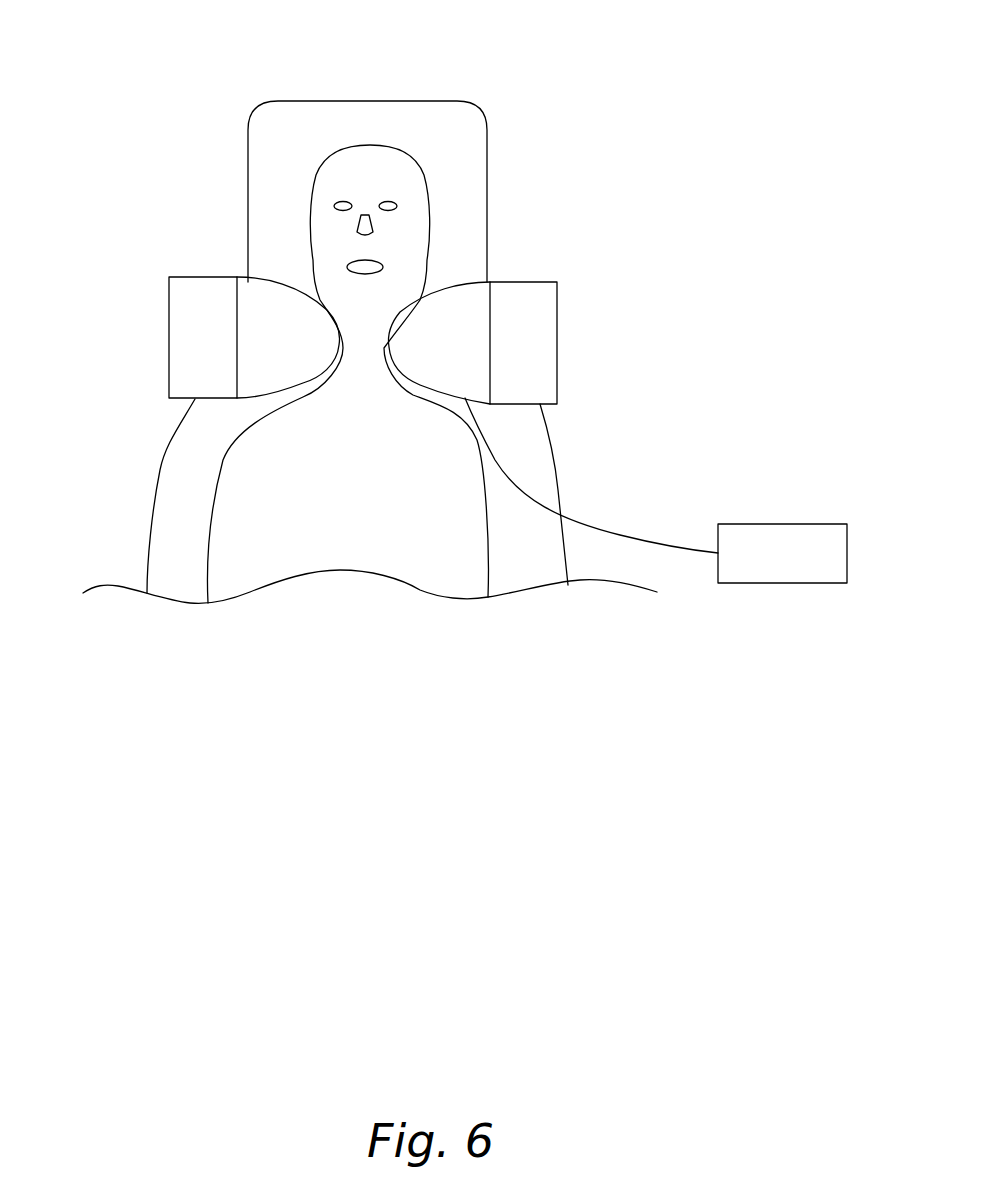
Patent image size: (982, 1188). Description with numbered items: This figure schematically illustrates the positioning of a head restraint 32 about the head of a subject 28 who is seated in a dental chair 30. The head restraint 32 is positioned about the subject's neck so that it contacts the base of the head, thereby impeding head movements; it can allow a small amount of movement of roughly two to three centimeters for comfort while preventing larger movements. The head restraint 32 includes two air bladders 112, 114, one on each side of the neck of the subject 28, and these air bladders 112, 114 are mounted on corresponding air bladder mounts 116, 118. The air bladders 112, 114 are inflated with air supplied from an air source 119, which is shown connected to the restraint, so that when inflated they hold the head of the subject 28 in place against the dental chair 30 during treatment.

The dental chair 30 is at (465, 118).
The subject 28 is at (427, 195).
The head restraint 32 is at (376, 350).
The air bladder 112 is at (275, 317).
The air bladder 114 is at (435, 315).
The air bladder mount 116 is at (180, 363).
The air bladder mount 118 is at (540, 373).
The air source 119 is at (790, 532).